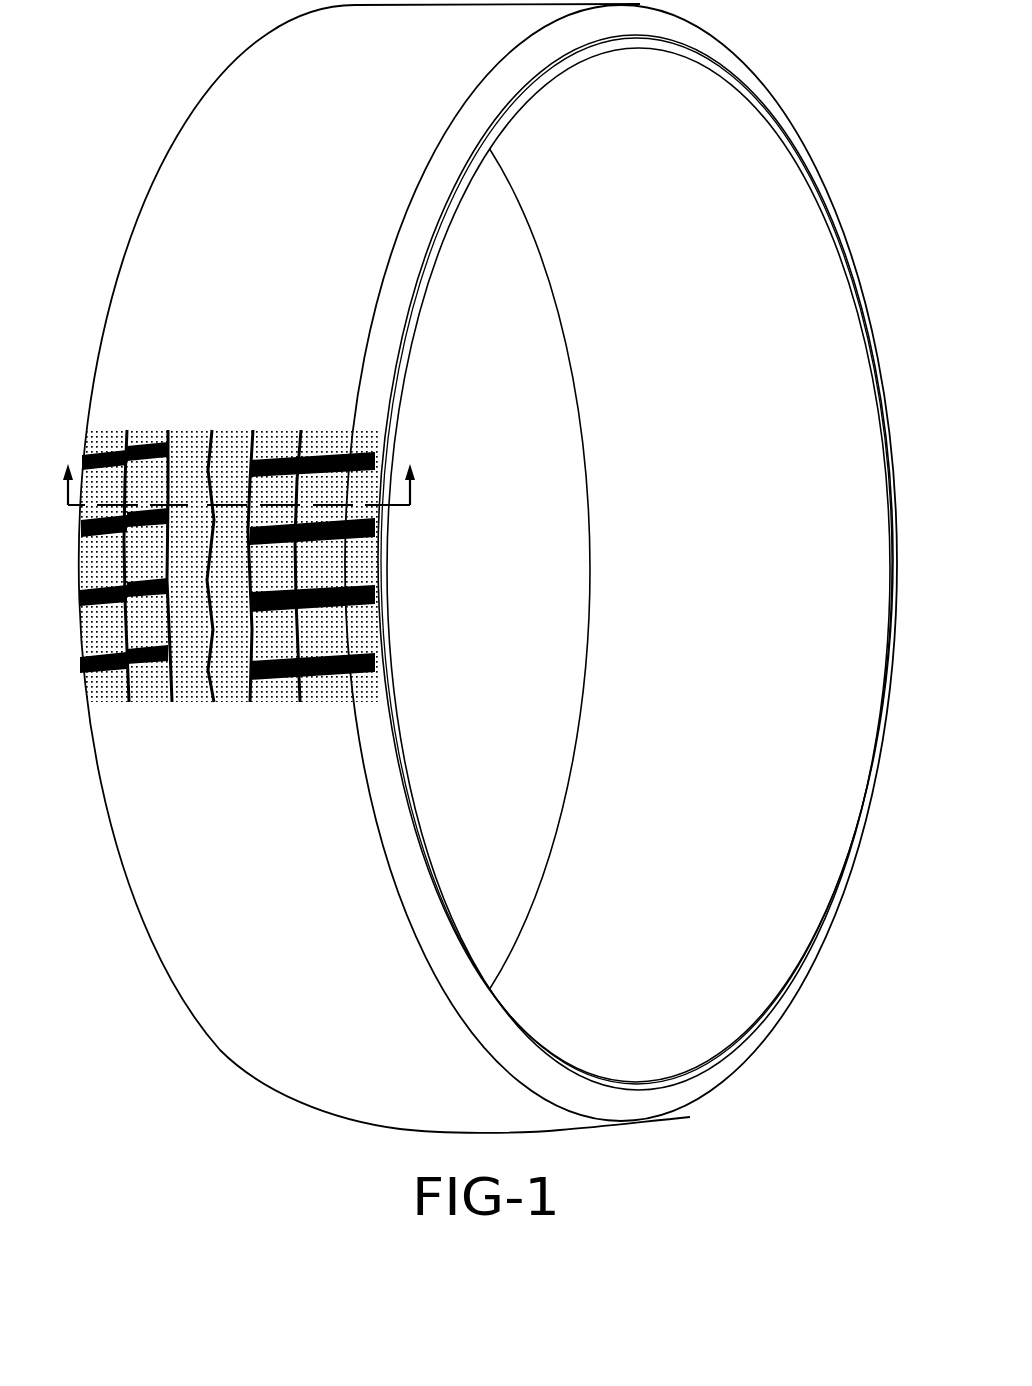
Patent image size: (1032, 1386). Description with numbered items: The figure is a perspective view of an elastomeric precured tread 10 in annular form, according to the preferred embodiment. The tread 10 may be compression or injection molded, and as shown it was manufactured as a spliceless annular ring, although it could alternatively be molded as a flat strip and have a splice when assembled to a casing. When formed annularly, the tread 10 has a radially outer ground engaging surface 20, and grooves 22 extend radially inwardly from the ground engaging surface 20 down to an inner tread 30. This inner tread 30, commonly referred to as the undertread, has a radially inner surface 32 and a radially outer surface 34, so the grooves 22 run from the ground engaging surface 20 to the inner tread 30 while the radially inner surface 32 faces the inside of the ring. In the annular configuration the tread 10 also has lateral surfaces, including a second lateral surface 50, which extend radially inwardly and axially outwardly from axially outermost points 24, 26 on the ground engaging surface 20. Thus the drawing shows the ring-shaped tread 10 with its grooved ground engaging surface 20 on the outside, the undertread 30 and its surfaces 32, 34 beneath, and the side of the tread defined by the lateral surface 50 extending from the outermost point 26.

The tread 10 is at (479, 568).
The ground engaging surface 20 is at (266, 530).
The grooves 22 is at (313, 472).
The axially outermost point 24 is at (82, 493).
The axially outermost point 26 is at (350, 633).
The inner tread 30 is at (257, 472).
The radially inner surface 32 is at (623, 319).
The radially outer surface 34 is at (236, 542).
The second lateral surface 50 is at (357, 570).